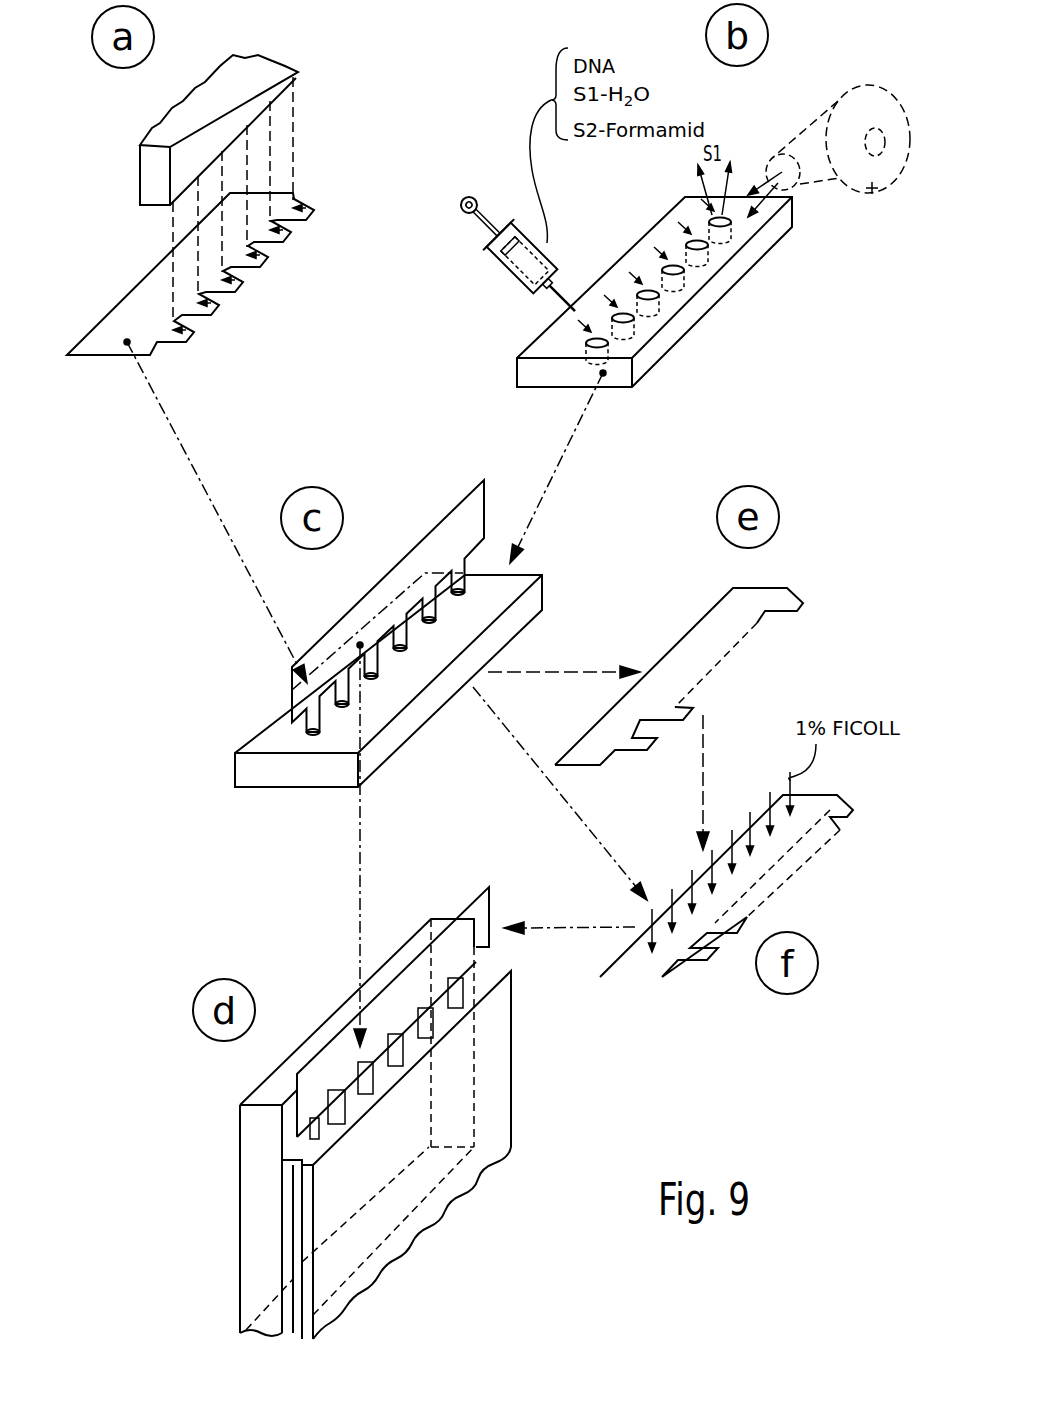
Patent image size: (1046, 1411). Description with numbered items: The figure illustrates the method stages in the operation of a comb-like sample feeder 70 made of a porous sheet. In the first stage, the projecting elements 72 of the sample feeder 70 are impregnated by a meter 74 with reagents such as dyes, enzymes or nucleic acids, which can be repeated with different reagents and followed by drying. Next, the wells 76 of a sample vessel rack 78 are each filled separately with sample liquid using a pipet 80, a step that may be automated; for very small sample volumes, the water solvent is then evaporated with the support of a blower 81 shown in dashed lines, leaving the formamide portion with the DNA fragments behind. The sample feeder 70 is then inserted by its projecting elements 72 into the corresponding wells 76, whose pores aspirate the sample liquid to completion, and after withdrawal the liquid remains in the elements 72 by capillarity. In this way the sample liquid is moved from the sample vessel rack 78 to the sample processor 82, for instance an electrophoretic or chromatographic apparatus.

The sample feeder 70 is at (142, 290).
The projecting elements 72 is at (186, 333).
The meter 74 is at (147, 162).
The wells 76 is at (712, 218).
The sample vessel rack 78 is at (707, 300).
The pipet 80 is at (504, 268).
The blower 81 is at (872, 190).
The sample processor 82 is at (230, 1202).